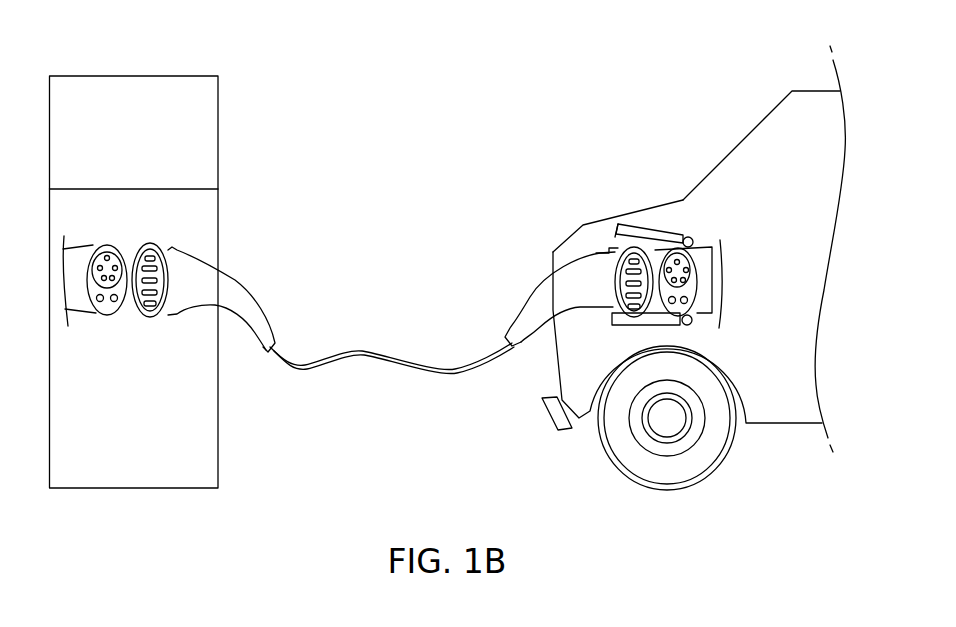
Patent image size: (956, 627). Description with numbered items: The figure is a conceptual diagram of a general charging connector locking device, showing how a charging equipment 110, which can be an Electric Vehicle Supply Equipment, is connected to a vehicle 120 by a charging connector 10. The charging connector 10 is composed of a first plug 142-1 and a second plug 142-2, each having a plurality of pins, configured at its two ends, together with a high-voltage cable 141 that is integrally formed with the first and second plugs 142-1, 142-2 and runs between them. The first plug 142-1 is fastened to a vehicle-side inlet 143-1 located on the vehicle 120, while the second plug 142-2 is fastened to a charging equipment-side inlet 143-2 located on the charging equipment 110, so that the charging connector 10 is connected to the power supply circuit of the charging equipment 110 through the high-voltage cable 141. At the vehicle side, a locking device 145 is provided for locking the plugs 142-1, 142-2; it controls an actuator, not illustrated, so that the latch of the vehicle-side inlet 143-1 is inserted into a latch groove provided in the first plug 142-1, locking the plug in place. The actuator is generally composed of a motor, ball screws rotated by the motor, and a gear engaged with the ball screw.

The charging connector 10 is at (392, 282).
The charging equipment 110 is at (146, 76).
The vehicle 120 is at (722, 159).
The high-voltage cable 141 is at (357, 349).
The first plug 142-1 is at (544, 290).
The second plug 142-2 is at (196, 268).
The vehicle-side inlet 143-1 is at (707, 250).
The charging equipment-side inlet 143-2 is at (83, 306).
The locking device 145 is at (615, 235).